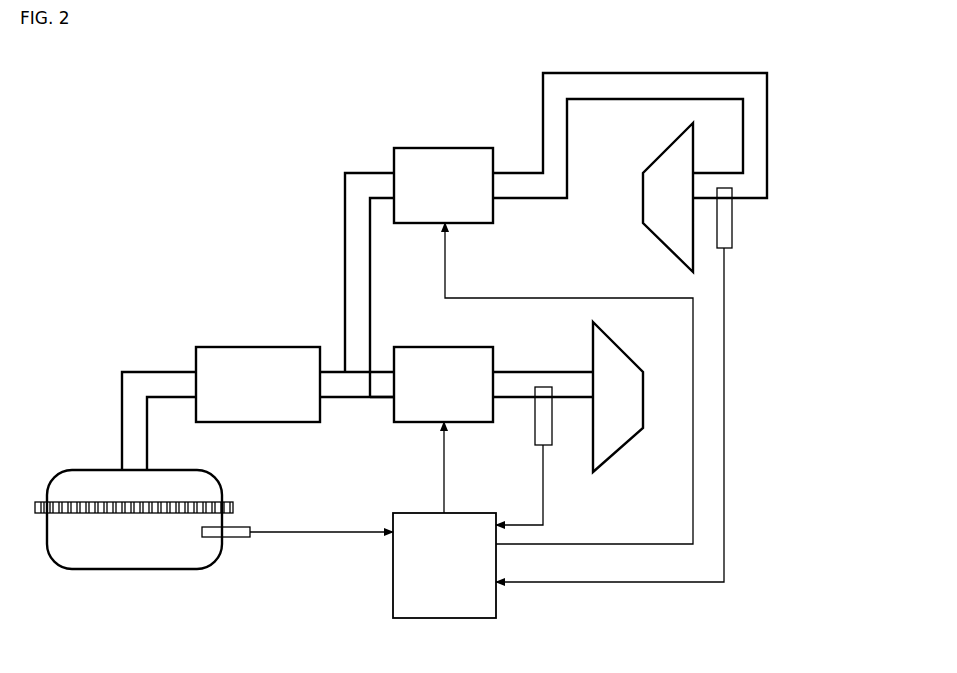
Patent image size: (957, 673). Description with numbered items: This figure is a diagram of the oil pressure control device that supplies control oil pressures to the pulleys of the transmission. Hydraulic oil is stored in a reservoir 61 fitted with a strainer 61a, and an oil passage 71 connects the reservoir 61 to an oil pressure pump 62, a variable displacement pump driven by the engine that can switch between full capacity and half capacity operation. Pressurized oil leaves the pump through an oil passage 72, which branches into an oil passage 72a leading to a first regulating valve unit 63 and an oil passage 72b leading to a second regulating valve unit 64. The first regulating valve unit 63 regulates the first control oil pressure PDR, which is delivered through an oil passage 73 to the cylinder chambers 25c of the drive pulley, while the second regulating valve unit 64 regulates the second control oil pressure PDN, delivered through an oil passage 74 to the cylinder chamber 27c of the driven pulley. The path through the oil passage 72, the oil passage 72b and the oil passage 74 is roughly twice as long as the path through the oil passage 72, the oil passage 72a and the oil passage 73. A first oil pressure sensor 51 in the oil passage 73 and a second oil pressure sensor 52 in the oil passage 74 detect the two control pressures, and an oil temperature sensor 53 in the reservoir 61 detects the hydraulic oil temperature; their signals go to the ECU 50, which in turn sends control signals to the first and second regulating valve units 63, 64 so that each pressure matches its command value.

The oil passage 74 is at (567, 73).
The second regulating valve unit 64 is at (415, 148).
The oil passage 72b is at (345, 196).
The cylinder chamber 27c is at (642, 210).
The second oil pressure sensor 52 is at (733, 234).
The oil pressure pump 62 is at (240, 347).
The oil passage 71 is at (145, 372).
The first regulating valve unit 63 is at (400, 347).
The oil passage 73 is at (527, 372).
The cylinder chambers 25c is at (618, 455).
The first oil pressure sensor 51 is at (536, 436).
The oil passage 72 is at (330, 399).
The oil passage 72a is at (388, 399).
The reservoir 61 is at (95, 470).
The strainer 61a is at (235, 507).
The oil temperature sensor 53 is at (235, 539).
The ECU 50 is at (393, 580).